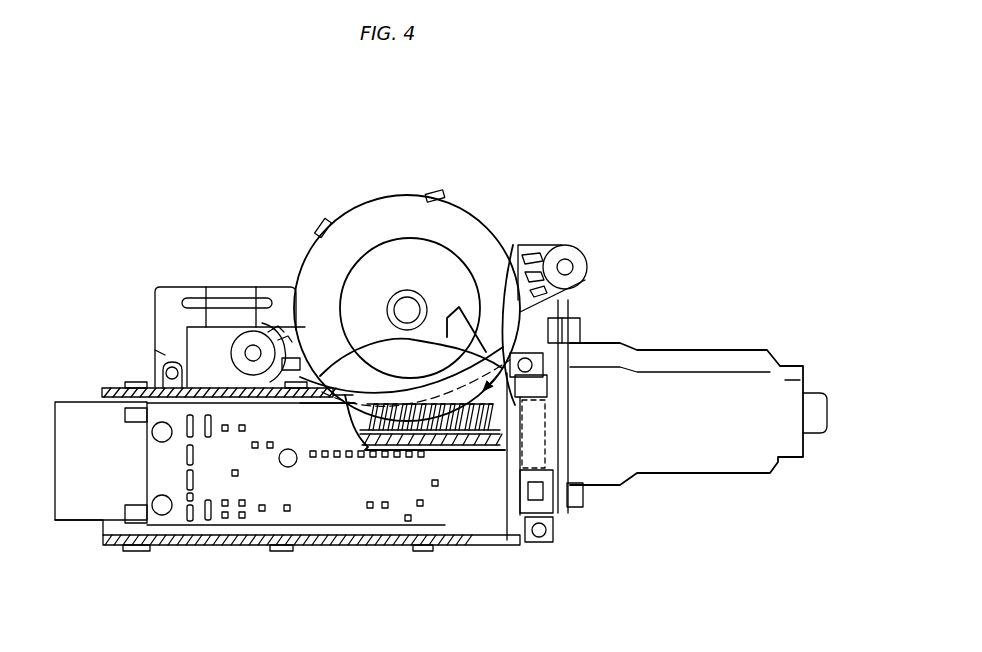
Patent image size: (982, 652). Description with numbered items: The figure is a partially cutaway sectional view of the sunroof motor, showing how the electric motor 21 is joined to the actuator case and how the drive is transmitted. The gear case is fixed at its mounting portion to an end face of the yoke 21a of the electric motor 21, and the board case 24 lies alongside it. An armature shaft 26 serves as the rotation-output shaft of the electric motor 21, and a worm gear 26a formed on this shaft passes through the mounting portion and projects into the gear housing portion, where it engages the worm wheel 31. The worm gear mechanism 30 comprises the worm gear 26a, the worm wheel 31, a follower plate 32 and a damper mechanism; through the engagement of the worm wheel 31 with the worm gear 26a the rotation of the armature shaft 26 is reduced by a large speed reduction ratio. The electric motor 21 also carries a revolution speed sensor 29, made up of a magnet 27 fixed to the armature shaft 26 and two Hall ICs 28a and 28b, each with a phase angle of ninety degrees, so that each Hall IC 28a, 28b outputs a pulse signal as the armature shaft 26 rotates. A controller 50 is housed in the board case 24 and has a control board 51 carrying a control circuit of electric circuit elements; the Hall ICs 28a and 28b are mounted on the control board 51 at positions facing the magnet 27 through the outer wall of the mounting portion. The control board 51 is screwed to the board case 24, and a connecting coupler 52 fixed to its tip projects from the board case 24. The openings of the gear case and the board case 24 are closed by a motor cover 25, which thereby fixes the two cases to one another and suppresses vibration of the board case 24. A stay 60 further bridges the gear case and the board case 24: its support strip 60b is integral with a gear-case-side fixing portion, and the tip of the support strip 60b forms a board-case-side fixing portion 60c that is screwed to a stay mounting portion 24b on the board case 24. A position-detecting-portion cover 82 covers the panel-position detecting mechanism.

The electric motor 21 is at (806, 368).
The yoke 21a is at (740, 450).
The board case 24 is at (203, 537).
The stay mounting portion 24b is at (158, 374).
The motor cover 25 is at (404, 212).
The armature shaft 26 is at (497, 430).
The worm gear 26a is at (495, 430).
The magnet 27 is at (548, 412).
The Hall IC 28a is at (565, 385).
The Hall IC 28b is at (548, 455).
The revolution speed sensor 29 is at (565, 458).
The worm gear mechanism 30 is at (520, 247).
The worm wheel 31 is at (373, 368).
The follower plate 32 is at (377, 366).
The controller 50 is at (347, 525).
The control board 51 is at (310, 507).
The connecting coupler 52 is at (73, 512).
The stay 60 is at (160, 285).
The support strip 60b is at (230, 287).
The board-case-side fixing portion 60c is at (163, 352).
The position-detecting-portion cover 82 is at (437, 260).